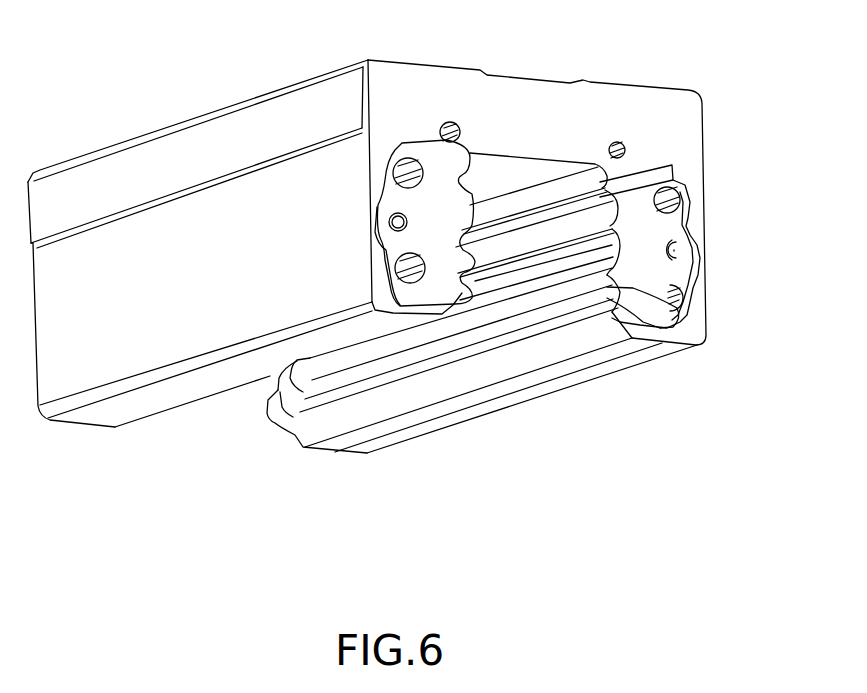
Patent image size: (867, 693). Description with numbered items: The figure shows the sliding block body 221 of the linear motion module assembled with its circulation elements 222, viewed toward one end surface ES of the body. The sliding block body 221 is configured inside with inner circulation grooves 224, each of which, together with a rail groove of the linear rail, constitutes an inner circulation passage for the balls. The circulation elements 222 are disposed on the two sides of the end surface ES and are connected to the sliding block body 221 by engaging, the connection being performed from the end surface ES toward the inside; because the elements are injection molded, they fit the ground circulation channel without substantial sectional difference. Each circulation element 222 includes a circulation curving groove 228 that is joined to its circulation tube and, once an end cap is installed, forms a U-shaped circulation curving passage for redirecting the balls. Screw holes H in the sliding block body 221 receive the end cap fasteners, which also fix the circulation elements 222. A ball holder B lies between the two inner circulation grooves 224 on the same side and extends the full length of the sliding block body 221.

The sliding block body 221 is at (157, 160).
The circulation element 222 is at (420, 147).
The inner circulation groove 224 is at (537, 247).
The circulation curving groove 228 is at (645, 275).
The end surface ES is at (677, 133).
The screw hole H is at (619, 143).
The ball holder B is at (555, 263).